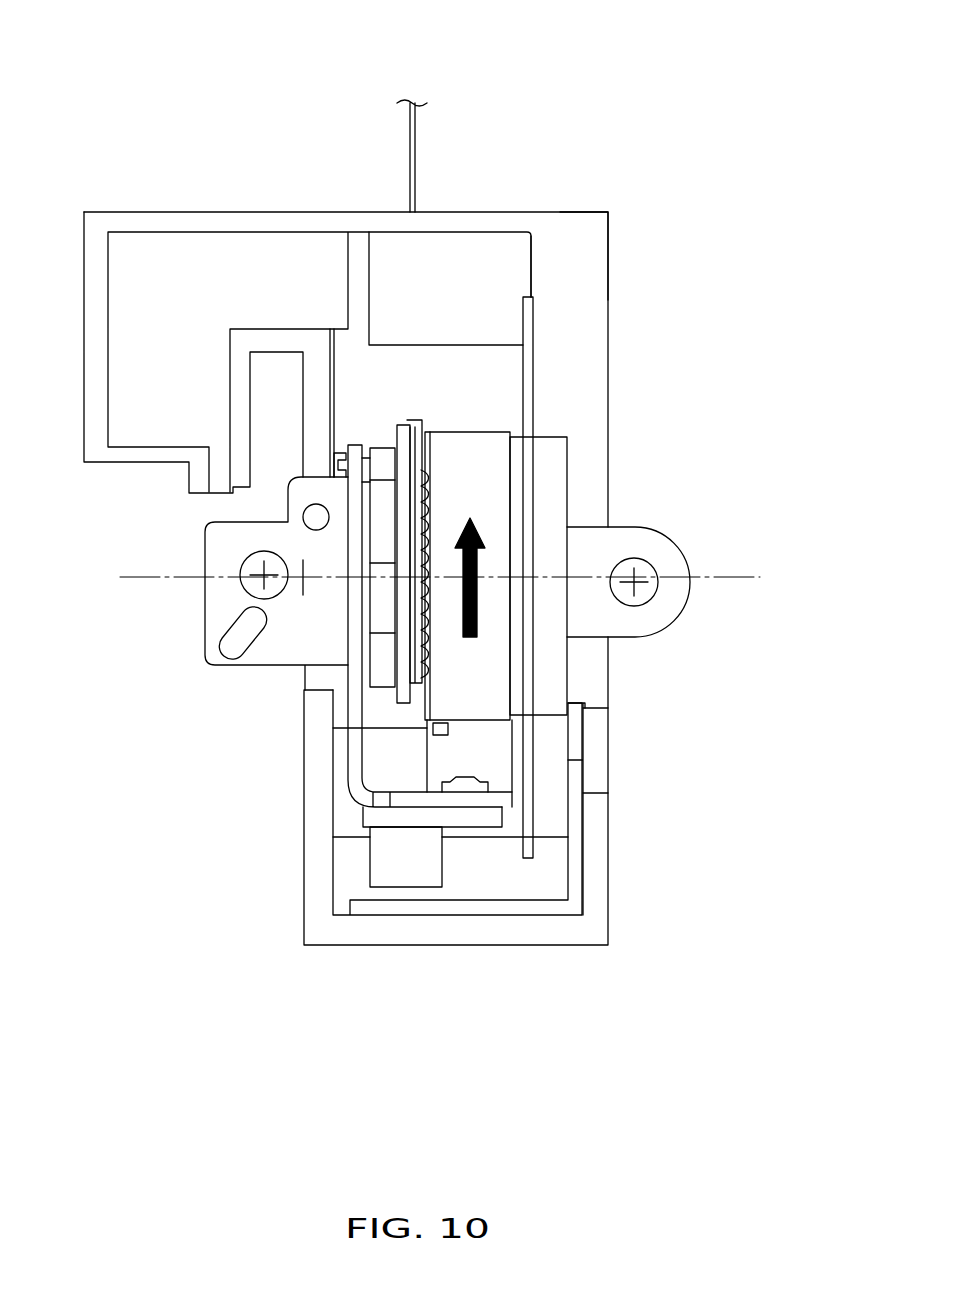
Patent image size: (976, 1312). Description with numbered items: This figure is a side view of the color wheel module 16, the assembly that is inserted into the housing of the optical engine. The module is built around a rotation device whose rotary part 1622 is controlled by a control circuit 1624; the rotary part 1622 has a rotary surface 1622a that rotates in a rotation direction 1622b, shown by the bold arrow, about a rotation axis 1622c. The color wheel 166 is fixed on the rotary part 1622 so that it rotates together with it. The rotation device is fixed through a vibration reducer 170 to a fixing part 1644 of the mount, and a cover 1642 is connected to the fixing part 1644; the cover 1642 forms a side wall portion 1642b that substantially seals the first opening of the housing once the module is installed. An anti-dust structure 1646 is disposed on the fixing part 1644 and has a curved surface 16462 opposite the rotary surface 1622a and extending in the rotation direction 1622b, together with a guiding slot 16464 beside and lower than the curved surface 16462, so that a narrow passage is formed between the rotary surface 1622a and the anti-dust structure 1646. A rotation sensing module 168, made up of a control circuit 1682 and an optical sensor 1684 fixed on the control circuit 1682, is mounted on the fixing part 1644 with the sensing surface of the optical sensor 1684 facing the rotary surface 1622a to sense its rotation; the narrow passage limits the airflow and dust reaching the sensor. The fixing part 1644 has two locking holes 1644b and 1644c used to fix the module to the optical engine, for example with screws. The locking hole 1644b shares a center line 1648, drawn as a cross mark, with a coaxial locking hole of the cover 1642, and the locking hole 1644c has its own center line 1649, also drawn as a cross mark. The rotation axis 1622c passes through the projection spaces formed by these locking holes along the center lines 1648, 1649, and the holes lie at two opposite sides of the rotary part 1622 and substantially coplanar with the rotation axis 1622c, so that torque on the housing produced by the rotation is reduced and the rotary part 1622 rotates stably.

The color wheel module 16 is at (153, 55).
The control circuit 1624 is at (415, 147).
The cover 1642 is at (125, 414).
The side wall portion 1642b is at (577, 246).
The color wheel 166 is at (530, 308).
The rotary part 1622 is at (557, 655).
The rotary surface 1622a is at (497, 678).
The rotation direction 1622b is at (477, 527).
The rotation axis 1622c is at (300, 595).
The fixing part 1644 is at (358, 777).
The locking hole 1644b is at (653, 543).
The locking hole 1644c is at (241, 606).
The center line 1649 is at (252, 556).
The center line 1648 is at (644, 598).
The vibration reducer 170 is at (383, 635).
The anti-dust structure 1646 is at (500, 783).
The curved surface 16462 is at (444, 731).
The guiding slot 16464 is at (493, 727).
The rotation sensing module 168 is at (451, 913).
The control circuit 1682 is at (465, 787).
The optical sensor 1684 is at (495, 823).